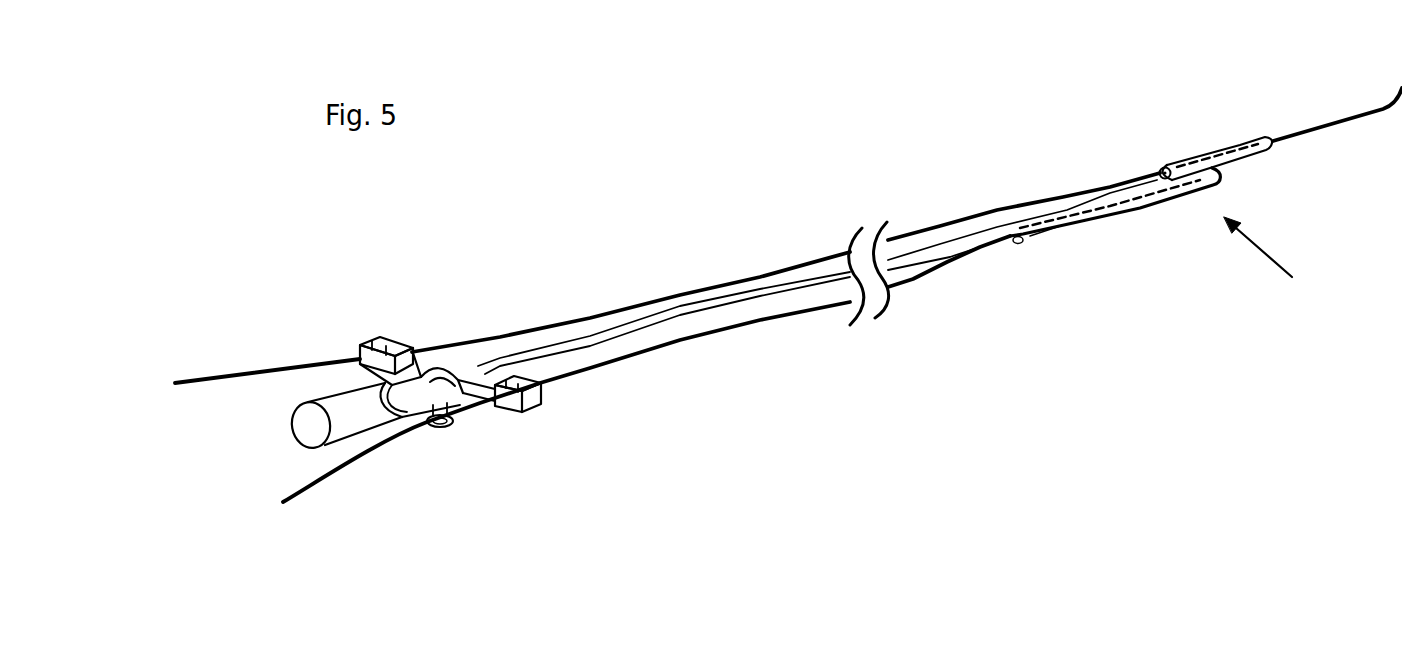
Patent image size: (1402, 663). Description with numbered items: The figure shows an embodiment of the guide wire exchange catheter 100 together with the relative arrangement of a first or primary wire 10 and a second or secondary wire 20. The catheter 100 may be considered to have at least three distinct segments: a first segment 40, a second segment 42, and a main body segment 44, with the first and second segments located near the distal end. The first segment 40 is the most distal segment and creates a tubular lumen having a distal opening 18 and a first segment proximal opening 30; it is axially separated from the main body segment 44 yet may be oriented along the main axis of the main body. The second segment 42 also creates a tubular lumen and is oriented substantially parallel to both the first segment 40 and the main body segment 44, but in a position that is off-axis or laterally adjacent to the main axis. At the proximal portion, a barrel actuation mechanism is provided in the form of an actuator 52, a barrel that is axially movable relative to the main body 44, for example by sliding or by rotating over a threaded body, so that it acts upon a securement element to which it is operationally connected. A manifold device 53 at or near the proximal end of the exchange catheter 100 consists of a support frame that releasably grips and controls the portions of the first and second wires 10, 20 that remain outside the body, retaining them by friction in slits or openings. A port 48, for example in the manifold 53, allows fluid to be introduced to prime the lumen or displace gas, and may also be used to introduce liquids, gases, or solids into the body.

The first or primary wire 10 is at (240, 368).
The distal opening 18 is at (1274, 140).
The second or secondary wire 20 is at (305, 497).
The first segment proximal opening 30 is at (1160, 172).
The first segment 40 is at (1197, 152).
The second segment 42 is at (1122, 216).
The main body segment 44 is at (818, 273).
The port 48 is at (444, 432).
The actuator 52 is at (285, 435).
The manifold device 53 is at (537, 417).
The exchange catheter 100 is at (1275, 265).